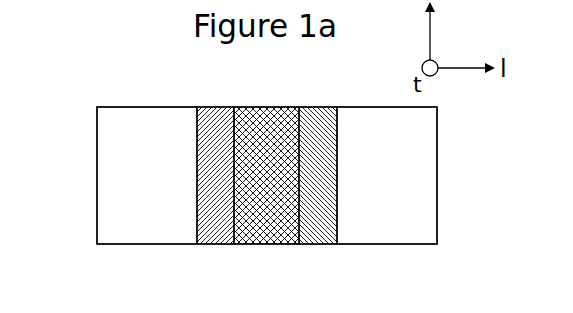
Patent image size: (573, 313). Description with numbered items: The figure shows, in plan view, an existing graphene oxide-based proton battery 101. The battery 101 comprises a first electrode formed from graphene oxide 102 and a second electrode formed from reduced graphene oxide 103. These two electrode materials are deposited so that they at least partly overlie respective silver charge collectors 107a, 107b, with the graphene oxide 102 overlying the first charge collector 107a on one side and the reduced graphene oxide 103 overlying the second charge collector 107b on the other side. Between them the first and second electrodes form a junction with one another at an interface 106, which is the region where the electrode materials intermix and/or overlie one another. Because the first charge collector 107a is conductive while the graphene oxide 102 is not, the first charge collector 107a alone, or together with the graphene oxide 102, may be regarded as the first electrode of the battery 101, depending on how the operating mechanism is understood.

The graphene oxide-based proton battery 101 is at (108, 50).
The graphene oxide 102 is at (213, 123).
The reduced graphene oxide 103 is at (317, 127).
The interface 106 is at (258, 128).
The first silver charge collector 107a is at (147, 175).
The second silver charge collector 107b is at (387, 175).